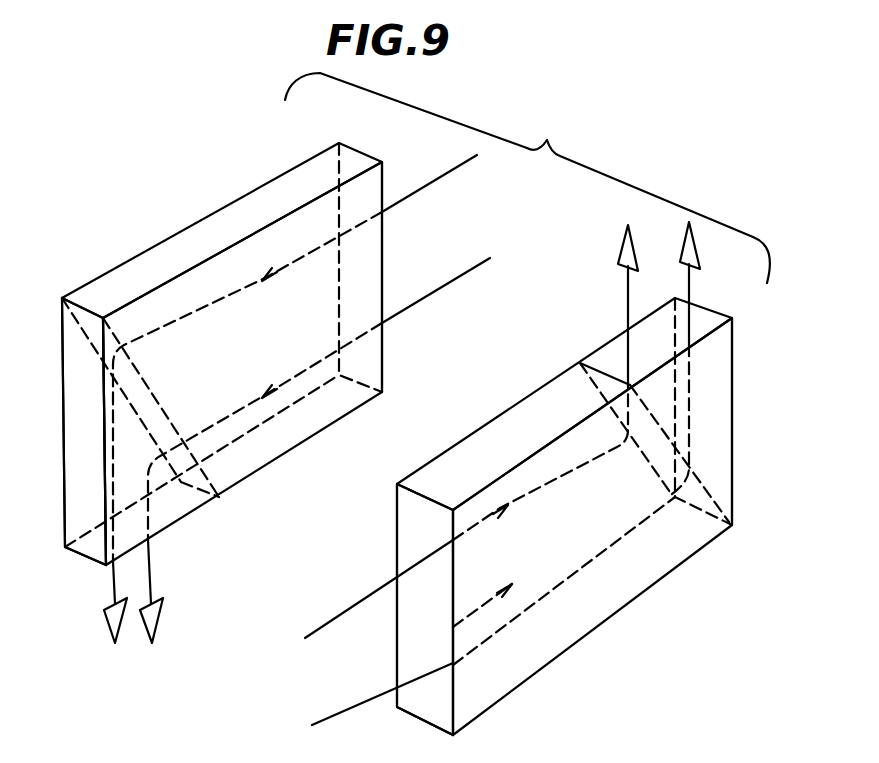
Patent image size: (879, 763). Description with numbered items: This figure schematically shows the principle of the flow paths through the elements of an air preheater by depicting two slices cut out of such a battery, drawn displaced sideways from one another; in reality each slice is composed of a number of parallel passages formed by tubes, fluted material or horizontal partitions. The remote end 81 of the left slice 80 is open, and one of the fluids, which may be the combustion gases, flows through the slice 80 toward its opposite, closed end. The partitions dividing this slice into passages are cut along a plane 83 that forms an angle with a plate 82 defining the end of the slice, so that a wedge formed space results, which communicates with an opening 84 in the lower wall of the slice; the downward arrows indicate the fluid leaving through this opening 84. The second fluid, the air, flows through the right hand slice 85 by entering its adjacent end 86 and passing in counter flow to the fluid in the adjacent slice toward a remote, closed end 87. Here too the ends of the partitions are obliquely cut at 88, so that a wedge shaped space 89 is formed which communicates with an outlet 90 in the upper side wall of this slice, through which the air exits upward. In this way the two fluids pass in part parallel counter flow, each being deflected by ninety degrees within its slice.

The left slice 80 is at (229, 220).
The remote end 81 is at (366, 186).
The plate 82 is at (83, 438).
The plane 83 is at (159, 401).
The opening 84 is at (163, 505).
The right hand slice 85 is at (523, 413).
The adjacent end 86 is at (418, 538).
The remote closed end 87 is at (713, 413).
The obliquely cut ends of partitions 88 is at (695, 473).
The wedge shaped space 89 is at (703, 444).
The outlet 90 is at (703, 323).